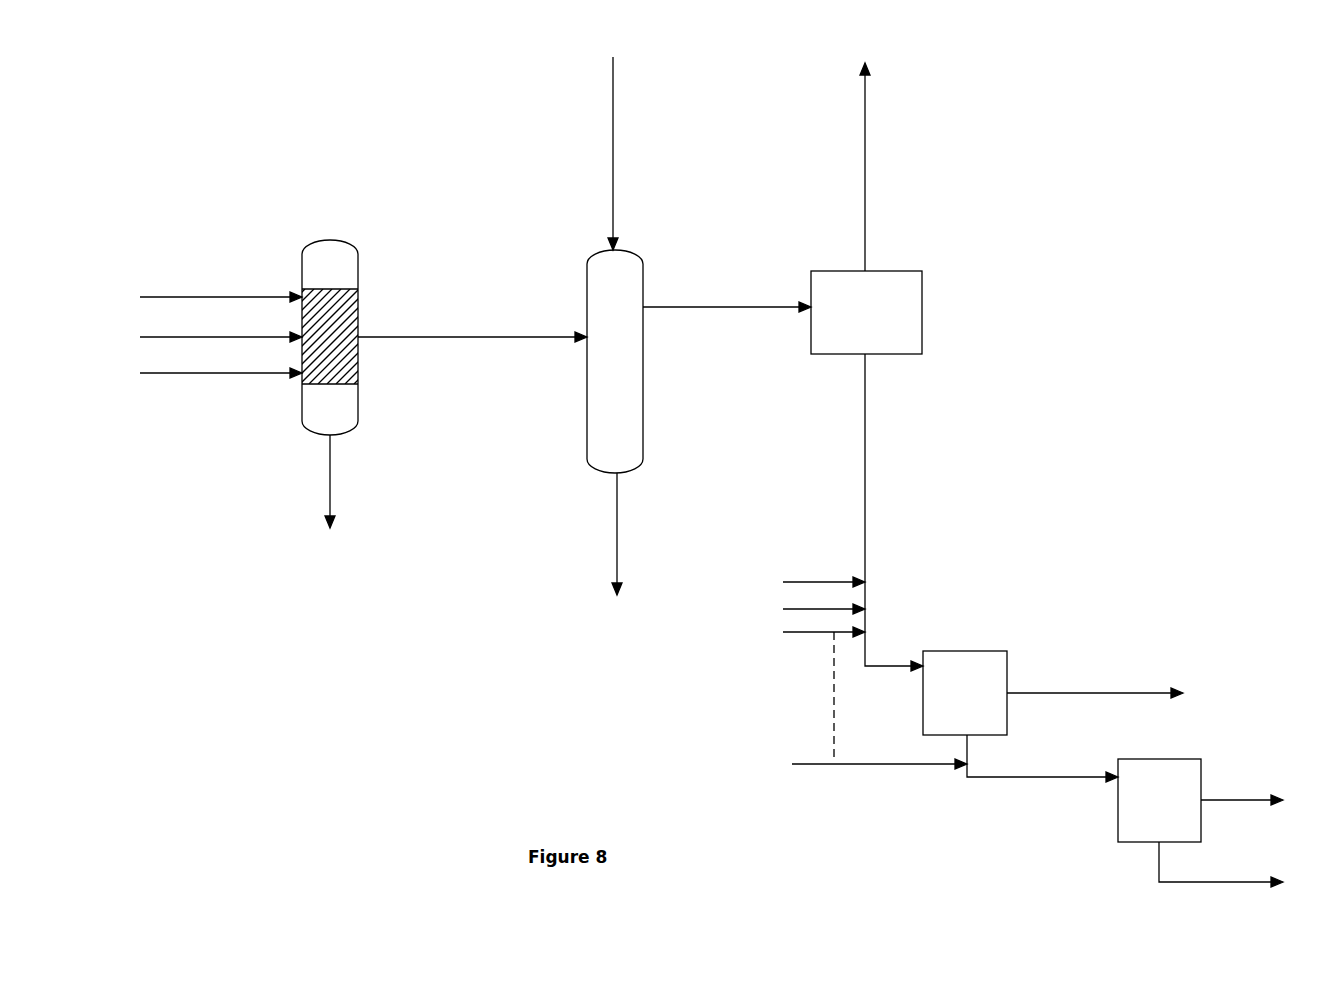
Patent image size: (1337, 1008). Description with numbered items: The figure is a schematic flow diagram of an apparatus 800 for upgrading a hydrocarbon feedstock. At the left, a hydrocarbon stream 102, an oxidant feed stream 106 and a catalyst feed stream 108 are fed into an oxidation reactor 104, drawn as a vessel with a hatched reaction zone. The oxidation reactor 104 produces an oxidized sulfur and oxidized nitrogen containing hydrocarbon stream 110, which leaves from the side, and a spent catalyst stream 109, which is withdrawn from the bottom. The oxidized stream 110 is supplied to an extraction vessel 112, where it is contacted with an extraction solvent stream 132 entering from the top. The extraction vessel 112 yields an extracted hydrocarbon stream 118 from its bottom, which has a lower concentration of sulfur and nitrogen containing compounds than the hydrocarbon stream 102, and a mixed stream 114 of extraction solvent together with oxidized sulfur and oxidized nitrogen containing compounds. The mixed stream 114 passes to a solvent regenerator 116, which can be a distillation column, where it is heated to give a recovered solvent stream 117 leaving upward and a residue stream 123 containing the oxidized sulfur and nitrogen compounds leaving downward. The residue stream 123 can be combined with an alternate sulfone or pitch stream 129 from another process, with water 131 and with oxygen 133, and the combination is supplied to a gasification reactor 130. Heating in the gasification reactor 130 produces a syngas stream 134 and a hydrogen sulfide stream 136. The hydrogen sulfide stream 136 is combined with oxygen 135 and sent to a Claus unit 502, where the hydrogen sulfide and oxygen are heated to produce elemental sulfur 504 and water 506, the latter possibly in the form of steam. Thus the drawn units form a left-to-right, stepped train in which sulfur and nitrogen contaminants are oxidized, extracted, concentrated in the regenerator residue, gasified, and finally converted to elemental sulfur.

The apparatus 800 is at (172, 50).
The hydrocarbon stream 102 is at (170, 337).
The oxidation reactor 104 is at (346, 240).
The oxidant feed stream 106 is at (170, 297).
The catalyst feed stream 108 is at (170, 373).
The spent catalyst stream 109 is at (330, 503).
The oxidized sulfur and oxidized nitrogen containing hydrocarbon stream 110 is at (430, 337).
The extraction vessel 112 is at (587, 280).
The mixed stream 114 is at (657, 307).
The solvent regenerator 116 is at (811, 280).
The recovered solvent stream 117 is at (865, 162).
The extracted hydrocarbon stream 118 is at (617, 507).
The residue stream 123 is at (868, 522).
The alternate sulfone or pitch stream 129 is at (808, 582).
The gasification reactor 130 is at (943, 651).
The water 131 is at (808, 609).
The extraction solvent stream 132 is at (613, 148).
The oxygen 133 is at (807, 632).
The syngas stream 134 is at (1035, 693).
The oxygen 135 is at (932, 765).
The hydrogen sulfide stream 136 is at (1007, 777).
The Claus unit 502 is at (1172, 759).
The elemental sulfur 504 is at (1242, 800).
The water 506 is at (1242, 882).